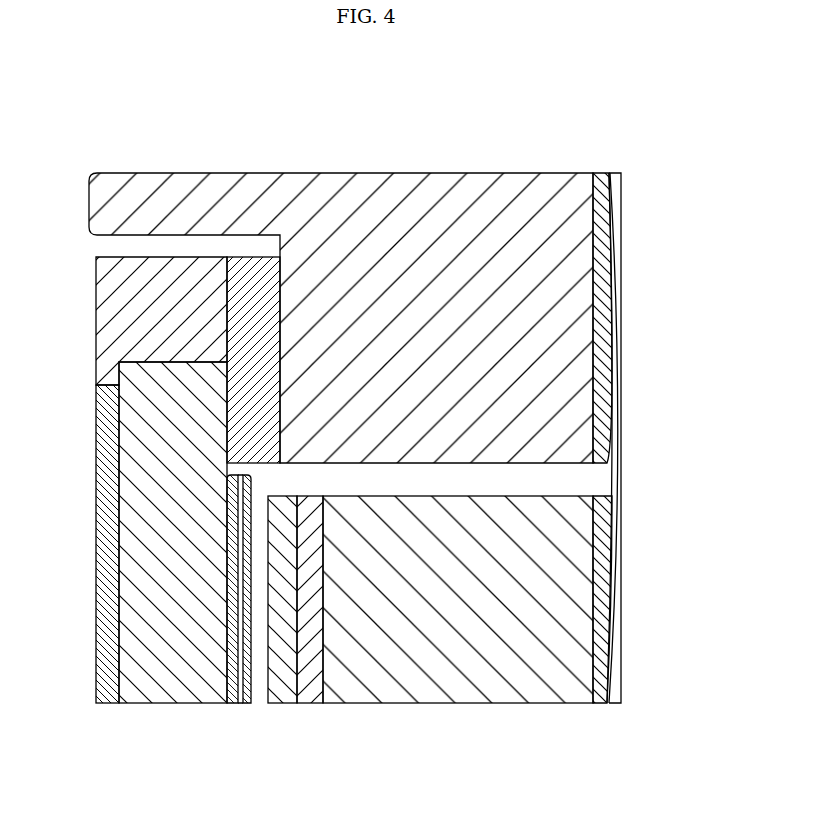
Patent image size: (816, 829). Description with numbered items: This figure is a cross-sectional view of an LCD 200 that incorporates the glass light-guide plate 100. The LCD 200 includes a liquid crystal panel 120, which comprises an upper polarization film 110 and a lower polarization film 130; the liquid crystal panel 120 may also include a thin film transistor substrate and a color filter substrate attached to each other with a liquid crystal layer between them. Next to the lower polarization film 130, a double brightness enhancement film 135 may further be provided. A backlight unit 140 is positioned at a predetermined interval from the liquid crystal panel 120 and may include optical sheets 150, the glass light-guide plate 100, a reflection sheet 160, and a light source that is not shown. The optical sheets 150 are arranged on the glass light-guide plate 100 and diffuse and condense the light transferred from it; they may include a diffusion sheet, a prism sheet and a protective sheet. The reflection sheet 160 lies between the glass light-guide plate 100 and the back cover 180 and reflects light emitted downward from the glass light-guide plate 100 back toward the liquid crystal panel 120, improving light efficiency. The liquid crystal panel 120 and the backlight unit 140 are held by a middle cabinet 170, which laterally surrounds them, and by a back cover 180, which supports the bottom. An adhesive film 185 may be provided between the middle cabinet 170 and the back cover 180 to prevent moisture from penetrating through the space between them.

The glass light-guide plate 100 is at (448, 703).
The upper polarization film 110 is at (108, 703).
The liquid crystal panel 120 is at (163, 697).
The lower polarization film 130 is at (227, 703).
The double brightness enhancement film (DBEF) 135 is at (252, 703).
The backlight unit 140 is at (444, 639).
The optical sheets 150 is at (291, 703).
The reflection sheet 160 is at (600, 617).
The middle cabinet 170 is at (424, 187).
The back cover 180 is at (619, 173).
The adhesive film 185 is at (600, 173).
The LCD 200 is at (533, 118).